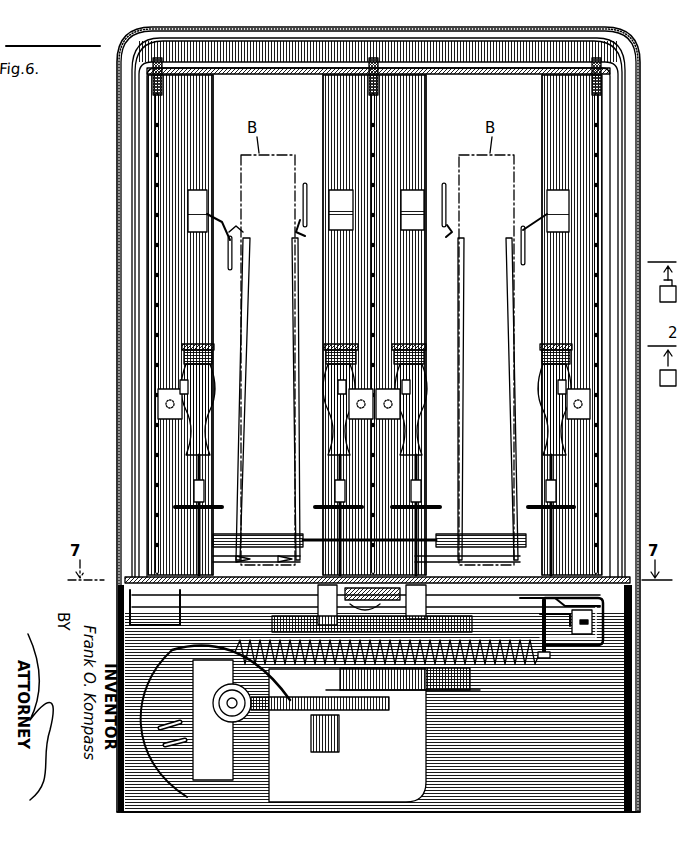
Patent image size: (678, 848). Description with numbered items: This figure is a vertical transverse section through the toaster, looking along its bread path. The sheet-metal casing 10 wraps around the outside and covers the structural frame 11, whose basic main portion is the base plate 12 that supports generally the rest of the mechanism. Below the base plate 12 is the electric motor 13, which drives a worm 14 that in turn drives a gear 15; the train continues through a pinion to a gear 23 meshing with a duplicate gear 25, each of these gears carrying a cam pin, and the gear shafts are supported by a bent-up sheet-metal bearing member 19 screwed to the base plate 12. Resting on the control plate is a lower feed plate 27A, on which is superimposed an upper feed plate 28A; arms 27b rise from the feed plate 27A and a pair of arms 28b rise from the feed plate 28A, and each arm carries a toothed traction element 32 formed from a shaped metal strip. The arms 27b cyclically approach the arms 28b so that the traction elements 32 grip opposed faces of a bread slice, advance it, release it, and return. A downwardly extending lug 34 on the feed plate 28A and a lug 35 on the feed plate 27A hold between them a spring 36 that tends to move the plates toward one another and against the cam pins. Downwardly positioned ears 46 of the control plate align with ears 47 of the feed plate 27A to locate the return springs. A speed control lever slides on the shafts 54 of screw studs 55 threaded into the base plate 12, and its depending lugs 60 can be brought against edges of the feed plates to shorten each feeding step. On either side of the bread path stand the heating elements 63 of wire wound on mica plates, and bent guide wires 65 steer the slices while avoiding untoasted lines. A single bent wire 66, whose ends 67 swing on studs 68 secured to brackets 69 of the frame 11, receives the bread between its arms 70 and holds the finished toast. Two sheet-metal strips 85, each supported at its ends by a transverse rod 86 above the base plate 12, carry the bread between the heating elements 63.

The casing 10 is at (105, 150).
The frame 11 is at (154, 105).
The base plate 12 is at (610, 590).
The electric motor 13 is at (375, 698).
The worm 14 is at (225, 720).
The gear 15 is at (360, 710).
The bearing member 19 is at (606, 634).
The gear 23 is at (318, 590).
The gear 25 is at (450, 620).
The feed plate 27A is at (580, 612).
The arms 27b is at (338, 472).
The feed plate 28A is at (560, 598).
The arms 28b is at (196, 472).
The traction element 32 is at (205, 344).
The lug 34 is at (184, 664).
The lug 35 is at (544, 660).
The spring 36 is at (424, 690).
The ears 46 is at (588, 638).
The ears 47 is at (594, 630).
The shafts 54 is at (380, 590).
The screw studs 55 is at (365, 586).
The depending lugs 60 is at (315, 614).
The heating elements 63 is at (155, 183).
The guide wires 65 is at (230, 270).
The wire 66 is at (250, 278).
The ends 67 is at (296, 232).
The studs 68 is at (226, 230).
The brackets 69 is at (200, 218).
The arms 70 is at (284, 388).
The sheet metal strip 85 is at (262, 534).
The rod 86 is at (210, 536).